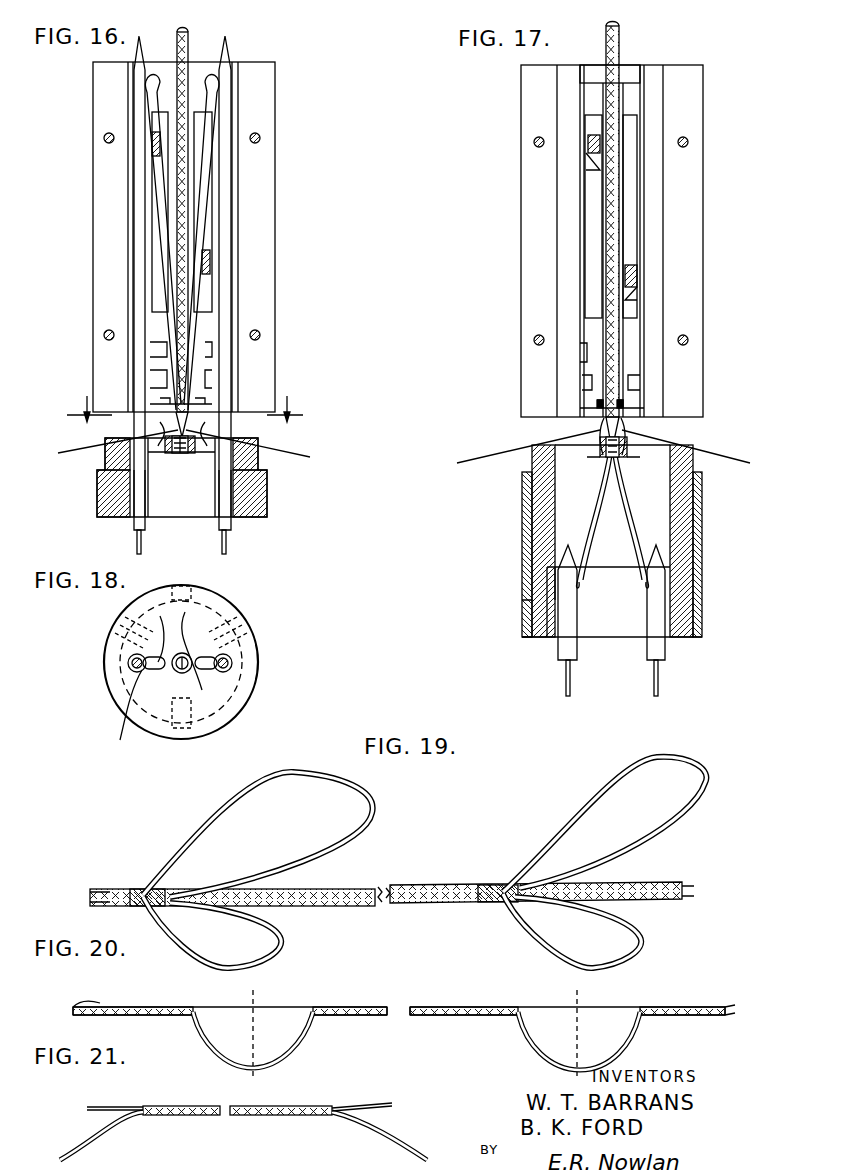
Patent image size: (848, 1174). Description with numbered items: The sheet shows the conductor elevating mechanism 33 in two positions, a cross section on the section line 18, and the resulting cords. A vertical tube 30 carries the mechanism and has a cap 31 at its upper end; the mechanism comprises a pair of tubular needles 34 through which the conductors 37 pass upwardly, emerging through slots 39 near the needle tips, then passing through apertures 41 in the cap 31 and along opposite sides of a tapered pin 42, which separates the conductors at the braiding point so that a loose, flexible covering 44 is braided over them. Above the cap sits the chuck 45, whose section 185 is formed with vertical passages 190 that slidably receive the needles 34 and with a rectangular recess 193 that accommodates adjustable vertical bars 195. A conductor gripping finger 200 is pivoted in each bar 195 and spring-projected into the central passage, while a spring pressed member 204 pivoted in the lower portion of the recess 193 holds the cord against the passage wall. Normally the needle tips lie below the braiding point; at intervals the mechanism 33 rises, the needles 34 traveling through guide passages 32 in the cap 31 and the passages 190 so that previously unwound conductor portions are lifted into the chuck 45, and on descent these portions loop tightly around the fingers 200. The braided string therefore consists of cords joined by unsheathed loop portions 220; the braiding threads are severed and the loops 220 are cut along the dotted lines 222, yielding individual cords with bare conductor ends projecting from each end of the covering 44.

In FIG. 16, the section line 18 is at (187, 407).
In FIG. 17, the vertical tube 30 is at (688, 580).
In FIG. 16, the cap 31 is at (256, 460).
In FIG. 17, the cap 31 is at (688, 460).
In FIG. 18, the cap 31 is at (210, 610).
In FIG. 17, the cylindrical guide passage 32 is at (680, 478).
In FIG. 18, the cylindrical guide passage 32 is at (120, 740).
In FIG. 16, the conductor elevating mechanism 33 is at (236, 428).
In FIG. 17, the conductor elevating mechanism 33 is at (680, 648).
In FIG. 16, the tubular needle 34 is at (217, 516).
In FIG. 17, the tubular needle 34 is at (655, 612).
In FIG. 18, the tubular needle 34 is at (130, 657).
In FIG. 16, the conductor 37 is at (140, 550).
In FIG. 17, the conductor 37 is at (562, 548).
In FIG. 18, the conductor 37 is at (137, 670).
In FIG. 19, the conductor 37 is at (128, 860).
In FIG. 20, the conductor 37 is at (75, 1004).
In FIG. 21, the conductor 37 is at (110, 1116).
In FIG. 16, the slot 39 is at (158, 55).
In FIG. 17, the slot 39 is at (647, 584).
In FIG. 16, the aperture 41 is at (178, 428).
In FIG. 17, the aperture 41 is at (600, 428).
In FIG. 18, the aperture 41 is at (160, 616).
In FIG. 16, the tapered pin 42 is at (183, 454).
In FIG. 17, the tapered pin 42 is at (608, 458).
In FIG. 18, the tapered pin 42 is at (202, 690).
In FIG. 19, the covering 44 is at (350, 885).
In FIG. 20, the covering 44 is at (372, 1005).
In FIG. 21, the covering 44 is at (250, 1108).
In FIG. 16, the chuck 45 is at (283, 212).
In FIG. 17, the chuck 45 is at (705, 226).
In FIG. 16, the chuck section 185 is at (258, 103).
In FIG. 17, the chuck section 185 is at (688, 103).
In FIG. 16, the vertical passage 190 is at (133, 178).
In FIG. 17, the vertical passage 190 is at (560, 228).
In FIG. 16, the rectangular recess 193 is at (155, 352).
In FIG. 17, the rectangular recess 193 is at (583, 355).
In FIG. 16, the vertical bar 195 is at (162, 268).
In FIG. 17, the vertical bar 195 is at (585, 262).
In FIG. 16, the conductor gripping finger 200 is at (157, 150).
In FIG. 17, the conductor gripping finger 200 is at (594, 155).
In FIG. 16, the spring pressed member 204 is at (155, 386).
In FIG. 17, the spring pressed member 204 is at (585, 385).
In FIG. 19, the unsheathed loop portion 220 is at (370, 815).
In FIG. 20, the unsheathed loop portion 220 is at (290, 1018).
In FIG. 20, the dotted line 222 is at (253, 1003).